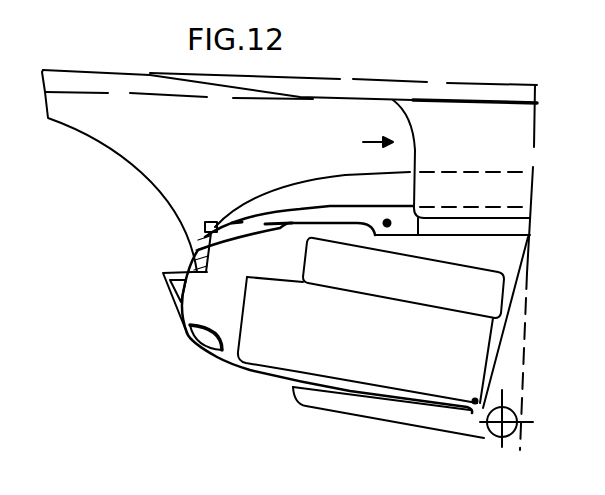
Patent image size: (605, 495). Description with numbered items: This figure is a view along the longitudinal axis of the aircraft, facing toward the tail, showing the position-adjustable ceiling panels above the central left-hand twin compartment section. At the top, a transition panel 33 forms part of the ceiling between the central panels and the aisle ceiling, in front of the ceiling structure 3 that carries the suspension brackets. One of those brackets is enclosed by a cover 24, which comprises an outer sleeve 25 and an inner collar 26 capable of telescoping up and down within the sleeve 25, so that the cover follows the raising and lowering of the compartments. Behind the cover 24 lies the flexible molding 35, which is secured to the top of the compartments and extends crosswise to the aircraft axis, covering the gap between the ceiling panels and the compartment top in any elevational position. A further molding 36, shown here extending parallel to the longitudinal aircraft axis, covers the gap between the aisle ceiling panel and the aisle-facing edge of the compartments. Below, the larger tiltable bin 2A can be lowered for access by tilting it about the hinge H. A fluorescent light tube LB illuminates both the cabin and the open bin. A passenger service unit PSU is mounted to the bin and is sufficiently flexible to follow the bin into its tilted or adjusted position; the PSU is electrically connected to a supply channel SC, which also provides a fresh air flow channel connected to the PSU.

The transition panel 33 is at (197, 151).
The outer sleeve 25 is at (473, 130).
The ceiling structure 3 is at (410, 97).
The cover 24 is at (359, 141).
The inner collar 26 is at (520, 227).
The flexible molding 35 is at (289, 200).
The molding 36 is at (193, 246).
The tiltable bin 2A is at (193, 310).
The fluorescent light tube LB is at (387, 228).
The hinge H is at (472, 401).
The passenger service unit PSU is at (340, 403).
The supply channel SC is at (526, 361).